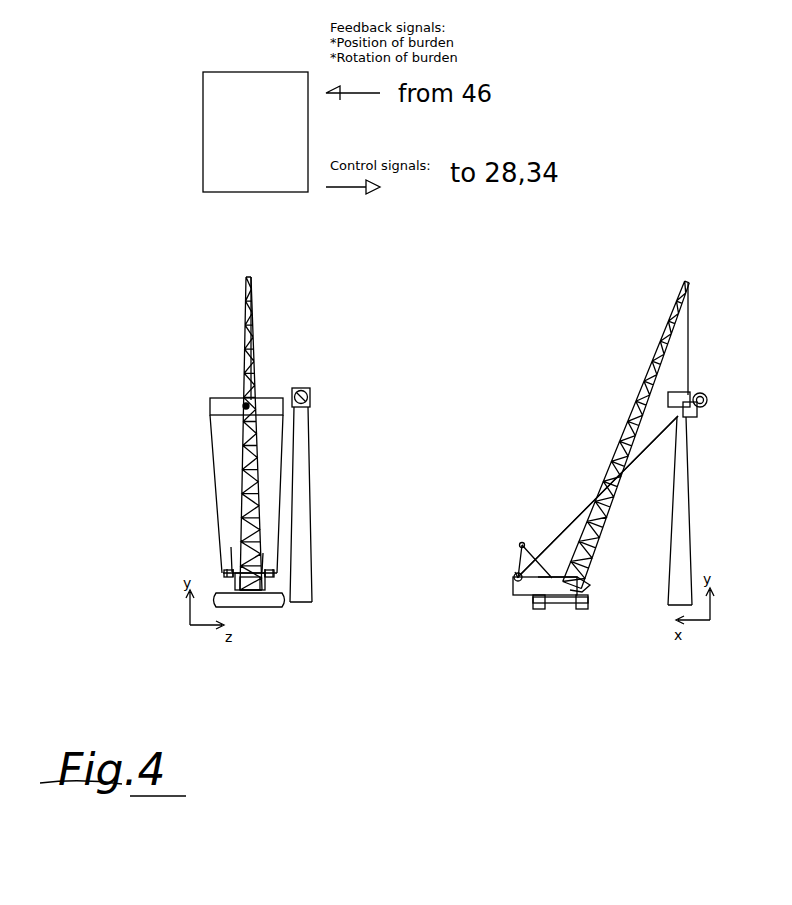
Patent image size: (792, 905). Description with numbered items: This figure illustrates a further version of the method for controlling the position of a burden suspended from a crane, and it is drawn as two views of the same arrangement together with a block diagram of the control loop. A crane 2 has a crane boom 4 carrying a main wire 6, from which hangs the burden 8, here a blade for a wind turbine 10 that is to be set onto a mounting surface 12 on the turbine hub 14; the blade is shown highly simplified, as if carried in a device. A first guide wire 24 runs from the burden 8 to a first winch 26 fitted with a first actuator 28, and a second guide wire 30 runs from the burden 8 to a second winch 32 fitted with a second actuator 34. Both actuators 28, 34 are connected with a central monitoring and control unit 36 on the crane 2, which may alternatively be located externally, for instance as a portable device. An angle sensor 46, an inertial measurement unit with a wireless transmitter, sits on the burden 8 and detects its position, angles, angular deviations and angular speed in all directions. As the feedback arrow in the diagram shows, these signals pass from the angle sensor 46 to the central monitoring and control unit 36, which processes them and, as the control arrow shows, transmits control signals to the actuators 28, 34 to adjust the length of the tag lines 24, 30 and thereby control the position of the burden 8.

The crane 2 is at (184, 510).
The crane boom 4 is at (258, 350).
The main wire 6 is at (257, 330).
The burden 8 is at (268, 405).
The wind turbine 10 is at (713, 482).
The mounting surface 12 is at (697, 408).
The turbine hub 14 is at (305, 395).
The first guide wire 24 is at (560, 478).
The first winch 26 is at (224, 573).
The first actuator 28 is at (494, 542).
The second guide wire 30 is at (598, 496).
The second winch 32 is at (278, 573).
The second actuator 34 is at (274, 550).
The central monitoring and control unit 36 is at (503, 632).
The angle sensor 46 is at (246, 406).